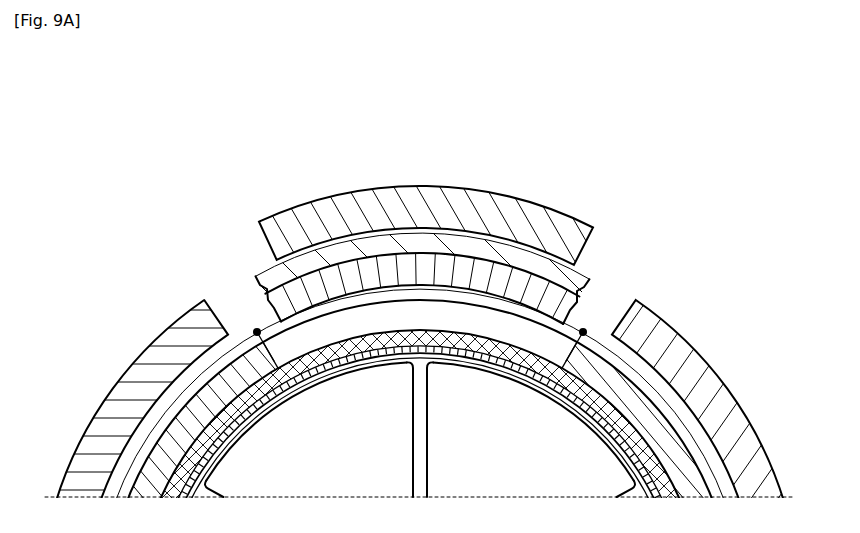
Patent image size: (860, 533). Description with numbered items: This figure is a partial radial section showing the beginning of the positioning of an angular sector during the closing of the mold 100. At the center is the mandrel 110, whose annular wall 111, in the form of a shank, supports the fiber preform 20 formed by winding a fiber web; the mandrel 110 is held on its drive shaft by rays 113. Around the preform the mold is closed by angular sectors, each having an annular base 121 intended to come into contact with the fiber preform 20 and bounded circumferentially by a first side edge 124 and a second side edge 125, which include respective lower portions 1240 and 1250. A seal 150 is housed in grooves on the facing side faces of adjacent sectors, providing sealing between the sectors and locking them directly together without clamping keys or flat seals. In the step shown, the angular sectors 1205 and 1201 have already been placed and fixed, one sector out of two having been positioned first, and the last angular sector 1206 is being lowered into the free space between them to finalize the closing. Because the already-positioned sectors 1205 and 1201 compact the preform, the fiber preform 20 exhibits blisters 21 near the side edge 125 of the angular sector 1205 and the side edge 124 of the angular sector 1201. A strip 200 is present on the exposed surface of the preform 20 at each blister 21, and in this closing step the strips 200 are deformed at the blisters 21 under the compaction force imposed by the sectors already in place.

The mold 100 is at (430, 306).
The last angular sector 1206 is at (424, 215).
The angular sector 1205 is at (140, 407).
The angular sector 1201 is at (670, 402).
The second side edge 125 is at (411, 262).
The first side edge 124 is at (444, 283).
The lower portion 1240 is at (389, 344).
The lower portion 1250 is at (462, 341).
The seal 150 is at (430, 390).
The blister 21 is at (420, 416).
The fiber preform 20 is at (430, 391).
The annular base 121 is at (420, 409).
The strip 200 is at (419, 441).
The annular wall 111 is at (420, 443).
The mandrel 110 is at (419, 421).
The rays 113 is at (420, 429).